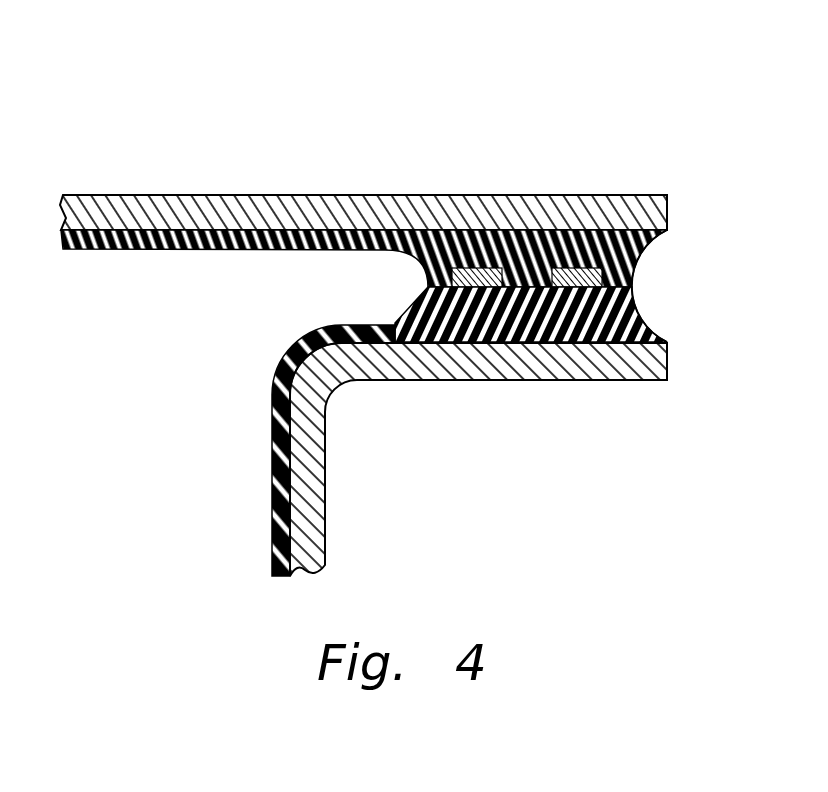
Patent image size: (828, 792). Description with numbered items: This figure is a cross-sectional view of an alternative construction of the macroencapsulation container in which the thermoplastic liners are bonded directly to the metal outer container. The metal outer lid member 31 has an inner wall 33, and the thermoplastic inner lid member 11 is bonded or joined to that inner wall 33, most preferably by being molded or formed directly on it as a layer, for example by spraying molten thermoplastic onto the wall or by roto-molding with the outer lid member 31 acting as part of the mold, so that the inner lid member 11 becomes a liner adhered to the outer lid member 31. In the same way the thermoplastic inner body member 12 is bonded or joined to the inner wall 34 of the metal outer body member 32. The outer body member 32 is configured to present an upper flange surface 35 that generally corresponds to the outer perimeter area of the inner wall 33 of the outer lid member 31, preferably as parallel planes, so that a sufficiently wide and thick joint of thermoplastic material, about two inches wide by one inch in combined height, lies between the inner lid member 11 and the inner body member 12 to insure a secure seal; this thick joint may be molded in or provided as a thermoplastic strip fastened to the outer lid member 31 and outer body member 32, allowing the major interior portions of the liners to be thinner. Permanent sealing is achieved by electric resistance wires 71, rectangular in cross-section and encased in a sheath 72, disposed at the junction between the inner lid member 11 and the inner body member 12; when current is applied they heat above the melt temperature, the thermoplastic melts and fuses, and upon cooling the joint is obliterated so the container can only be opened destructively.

The inner lid member 11 is at (363, 227).
The inner body member 12 is at (420, 450).
The outer lid member 31 is at (320, 193).
The outer body member 32 is at (615, 382).
The inner wall of the outer lid member 33 is at (168, 194).
The inner wall of the outer body member 34 is at (288, 507).
The upper flange surface 35 is at (640, 305).
The electric resistance wire 71 is at (457, 325).
The sheath 72 is at (487, 268).